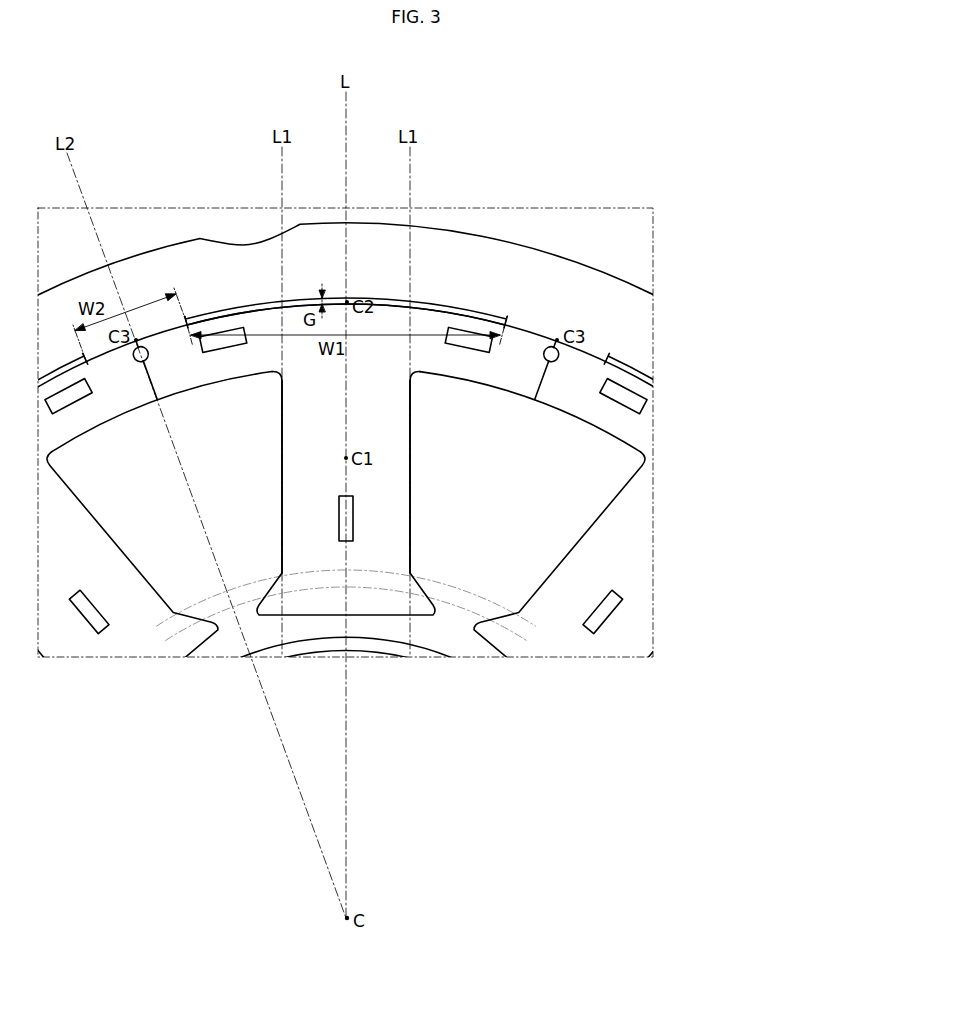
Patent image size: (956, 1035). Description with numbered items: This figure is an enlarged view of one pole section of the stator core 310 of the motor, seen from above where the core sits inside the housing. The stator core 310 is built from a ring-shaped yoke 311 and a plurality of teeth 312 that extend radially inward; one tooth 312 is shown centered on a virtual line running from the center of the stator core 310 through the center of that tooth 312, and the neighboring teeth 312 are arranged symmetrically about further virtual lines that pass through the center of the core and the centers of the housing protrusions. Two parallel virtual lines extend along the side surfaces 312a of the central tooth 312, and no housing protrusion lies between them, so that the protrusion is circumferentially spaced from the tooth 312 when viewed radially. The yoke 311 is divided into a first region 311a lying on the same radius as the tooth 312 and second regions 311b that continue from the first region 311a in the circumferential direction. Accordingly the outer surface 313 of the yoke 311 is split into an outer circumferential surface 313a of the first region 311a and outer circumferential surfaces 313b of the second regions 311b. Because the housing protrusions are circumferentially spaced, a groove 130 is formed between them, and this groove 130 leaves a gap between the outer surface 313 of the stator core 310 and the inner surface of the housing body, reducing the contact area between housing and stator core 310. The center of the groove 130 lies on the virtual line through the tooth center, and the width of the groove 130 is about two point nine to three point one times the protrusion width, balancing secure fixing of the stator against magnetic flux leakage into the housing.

The groove 130 is at (267, 298).
The stator core 310 is at (403, 454).
The yoke 311 is at (382, 454).
The first region 311a is at (385, 343).
The second region 311b is at (216, 323).
The tooth 312 is at (407, 512).
The side surface 312a is at (283, 544).
The outer surface 313 is at (434, 354).
The outer circumferential surface of the first region 313a is at (383, 300).
The outer circumferential surface of the second region 313b is at (449, 301).